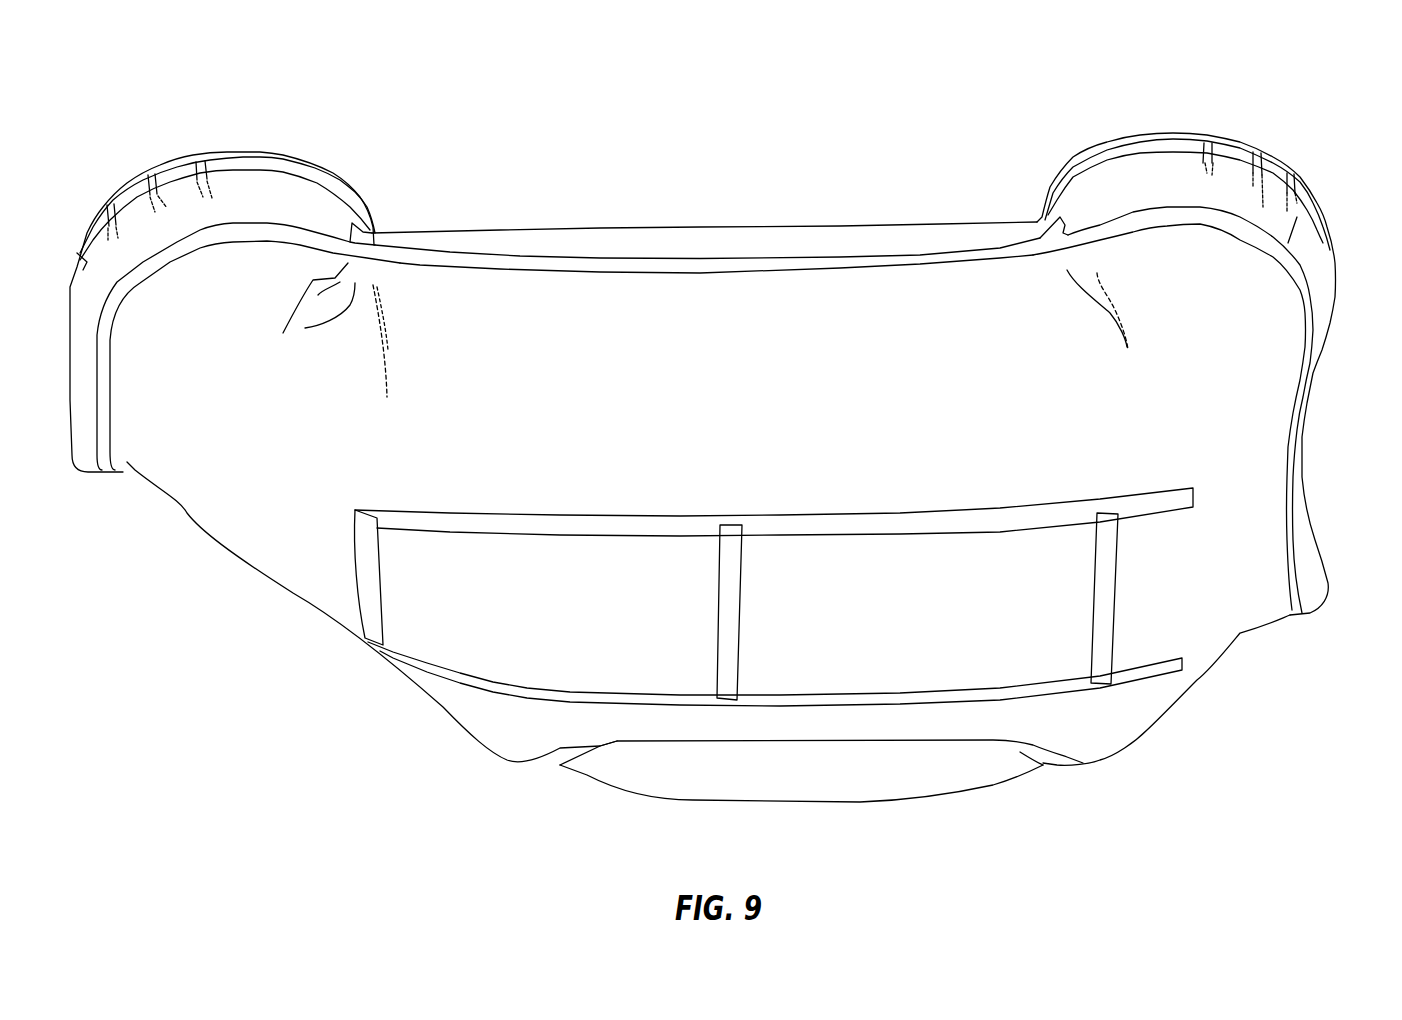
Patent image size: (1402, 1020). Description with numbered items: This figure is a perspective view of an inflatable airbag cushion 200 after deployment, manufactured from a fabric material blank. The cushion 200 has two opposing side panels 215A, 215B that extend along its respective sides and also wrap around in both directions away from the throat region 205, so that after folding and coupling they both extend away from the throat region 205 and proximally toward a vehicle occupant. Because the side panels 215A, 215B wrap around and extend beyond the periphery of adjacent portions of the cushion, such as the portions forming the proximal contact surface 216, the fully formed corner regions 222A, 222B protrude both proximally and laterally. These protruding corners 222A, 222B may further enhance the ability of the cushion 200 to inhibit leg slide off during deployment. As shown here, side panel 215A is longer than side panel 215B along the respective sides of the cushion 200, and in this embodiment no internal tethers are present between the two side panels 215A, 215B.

The cushion 200 is at (1050, 67).
The throat region 205 is at (870, 792).
The side panel 215A is at (1332, 228).
The side panel 215B is at (72, 245).
The proximal contact surface 216 is at (727, 232).
The corner region 222A is at (1192, 167).
The corner region 222B is at (217, 187).